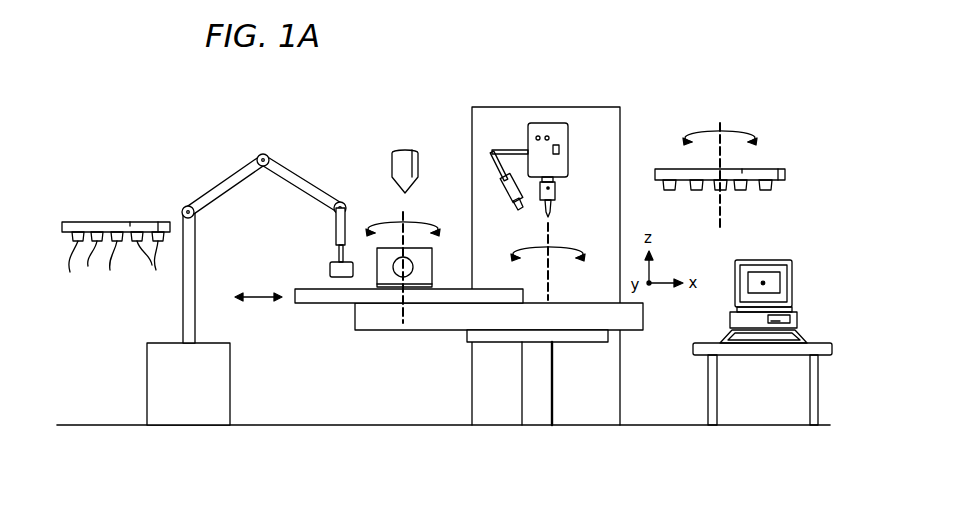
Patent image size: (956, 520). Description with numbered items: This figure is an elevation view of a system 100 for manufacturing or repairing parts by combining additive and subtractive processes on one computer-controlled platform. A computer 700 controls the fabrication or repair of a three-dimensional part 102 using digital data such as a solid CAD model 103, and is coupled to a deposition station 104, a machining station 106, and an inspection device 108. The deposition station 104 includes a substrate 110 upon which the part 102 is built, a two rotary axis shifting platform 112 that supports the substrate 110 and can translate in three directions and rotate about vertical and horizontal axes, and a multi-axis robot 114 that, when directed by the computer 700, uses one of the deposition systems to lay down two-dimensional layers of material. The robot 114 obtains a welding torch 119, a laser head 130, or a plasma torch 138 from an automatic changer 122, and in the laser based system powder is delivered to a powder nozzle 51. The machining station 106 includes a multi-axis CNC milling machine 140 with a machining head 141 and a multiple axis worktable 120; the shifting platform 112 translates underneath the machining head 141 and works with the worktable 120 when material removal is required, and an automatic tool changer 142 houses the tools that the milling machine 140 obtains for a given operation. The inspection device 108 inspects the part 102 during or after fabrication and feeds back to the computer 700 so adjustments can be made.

The system 100 is at (290, 108).
The powder nozzle 51 is at (390, 162).
The three-dimensional part 102 is at (432, 270).
The solid computer aided design model 103 is at (792, 278).
The deposition station 104 is at (381, 362).
The machining station 106 is at (575, 362).
The inspection device 108 is at (500, 192).
The substrate 110 is at (418, 288).
The two rotary axis shifting platform 112 is at (322, 307).
The multi-axis robot 114 is at (185, 312).
The welding torch 119 is at (152, 262).
The multiple axis worktable 120 is at (632, 333).
The automatic changer 122 is at (107, 222).
The laser head 130 is at (78, 268).
The plasma torch 138 is at (112, 262).
The multi-axis CNC milling machine 140 is at (590, 119).
The machining head 141 is at (555, 192).
The automatic tool changer 142 is at (777, 169).
The computer 700 is at (797, 318).